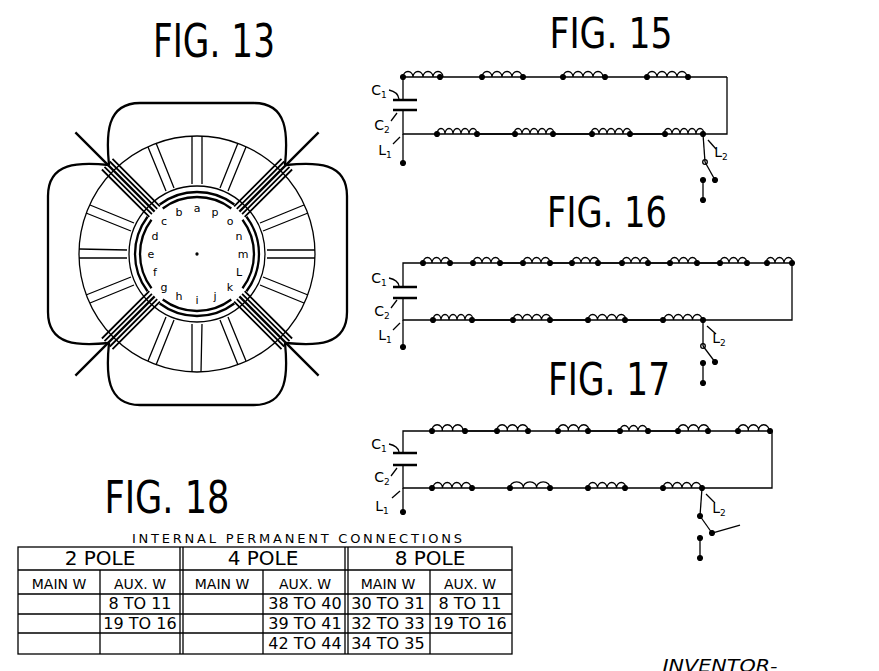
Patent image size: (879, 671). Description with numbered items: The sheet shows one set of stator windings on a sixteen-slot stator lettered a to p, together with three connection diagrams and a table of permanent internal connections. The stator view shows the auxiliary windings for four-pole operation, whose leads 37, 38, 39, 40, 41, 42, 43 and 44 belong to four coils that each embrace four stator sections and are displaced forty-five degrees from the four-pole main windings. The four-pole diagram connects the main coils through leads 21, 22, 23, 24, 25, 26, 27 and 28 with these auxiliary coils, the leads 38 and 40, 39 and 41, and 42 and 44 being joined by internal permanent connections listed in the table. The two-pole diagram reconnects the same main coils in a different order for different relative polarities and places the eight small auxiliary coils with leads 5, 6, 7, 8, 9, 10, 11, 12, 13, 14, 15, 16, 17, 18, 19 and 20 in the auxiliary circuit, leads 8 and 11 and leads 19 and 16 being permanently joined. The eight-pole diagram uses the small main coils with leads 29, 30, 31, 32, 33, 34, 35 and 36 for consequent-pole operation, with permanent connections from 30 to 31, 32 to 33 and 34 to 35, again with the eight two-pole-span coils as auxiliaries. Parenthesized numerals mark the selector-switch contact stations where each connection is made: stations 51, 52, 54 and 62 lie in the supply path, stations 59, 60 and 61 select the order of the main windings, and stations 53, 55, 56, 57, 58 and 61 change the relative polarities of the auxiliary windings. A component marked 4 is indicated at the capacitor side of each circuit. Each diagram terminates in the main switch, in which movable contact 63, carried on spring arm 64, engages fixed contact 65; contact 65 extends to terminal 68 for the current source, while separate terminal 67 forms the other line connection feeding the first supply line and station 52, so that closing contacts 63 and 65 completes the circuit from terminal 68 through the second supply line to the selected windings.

In FIG. 15, the capacitor unit 4 is at (380, 110).
In FIG. 16, the capacitor unit 4 is at (380, 296).
In FIG. 17, the capacitor unit 4 is at (378, 464).
In FIG. 16, the coil lead 5 is at (648, 261).
In FIG. 16, the coil lead 6 is at (622, 261).
In FIG. 16, the coil lead 7 is at (423, 261).
In FIG. 17, the coil lead 7 is at (770, 429).
In FIG. 16, the coil lead 8 is at (450, 261).
In FIG. 17, the coil lead 8 is at (738, 429).
In FIG. 16, the coil lead 9 is at (523, 261).
In FIG. 17, the coil lead 9 is at (620, 429).
In FIG. 16, the coil lead 10 is at (550, 261).
In FIG. 17, the coil lead 10 is at (648, 429).
In FIG. 16, the coil lead 11 is at (473, 261).
In FIG. 17, the coil lead 11 is at (708, 429).
In FIG. 16, the coil lead 12 is at (500, 261).
In FIG. 17, the coil lead 12 is at (678, 429).
In FIG. 16, the coil lead 13 is at (572, 261).
In FIG. 16, the coil lead 14 is at (598, 261).
In FIG. 16, the coil lead 15 is at (792, 261).
In FIG. 17, the coil lead 15 is at (588, 429).
In FIG. 16, the coil lead 16 is at (767, 261).
In FIG. 17, the coil lead 16 is at (558, 429).
In FIG. 16, the coil lead 17 is at (697, 261).
In FIG. 17, the coil lead 17 is at (432, 429).
In FIG. 16, the coil lead 18 is at (670, 261).
In FIG. 17, the coil lead 18 is at (465, 429).
In FIG. 16, the coil lead 19 is at (747, 261).
In FIG. 17, the coil lead 19 is at (528, 429).
In FIG. 16, the coil lead 20 is at (720, 261).
In FIG. 17, the coil lead 20 is at (497, 429).
In FIG. 15, the coil lead 21 is at (437, 132).
In FIG. 16, the coil lead 21 is at (433, 318).
In FIG. 15, the coil lead 22 is at (477, 132).
In FIG. 16, the coil lead 22 is at (472, 318).
In FIG. 15, the coil lead 23 is at (553, 132).
In FIG. 16, the coil lead 23 is at (513, 318).
In FIG. 15, the coil lead 24 is at (515, 132).
In FIG. 16, the coil lead 24 is at (550, 318).
In FIG. 15, the coil lead 25 is at (592, 132).
In FIG. 16, the coil lead 25 is at (703, 318).
In FIG. 15, the coil lead 26 is at (630, 132).
In FIG. 16, the coil lead 26 is at (663, 318).
In FIG. 15, the coil lead 27 is at (703, 132).
In FIG. 16, the coil lead 27 is at (625, 318).
In FIG. 15, the coil lead 28 is at (665, 132).
In FIG. 16, the coil lead 28 is at (588, 318).
In FIG. 17, the coil lead 29 is at (432, 486).
In FIG. 17, the coil lead 30 is at (472, 486).
In FIG. 17, the coil lead 31 is at (510, 486).
In FIG. 17, the coil lead 32 is at (550, 486).
In FIG. 17, the coil lead 33 is at (588, 486).
In FIG. 17, the coil lead 34 is at (625, 486).
In FIG. 17, the coil lead 35 is at (663, 486).
In FIG. 17, the coil lead 36 is at (702, 486).
In FIG. 13, the coil lead 37 is at (75, 132).
In FIG. 15, the coil lead 37 is at (403, 75).
In FIG. 13, the coil lead 38 is at (97, 335).
In FIG. 15, the coil lead 38 is at (440, 75).
In FIG. 13, the coil lead 39 is at (75, 376).
In FIG. 15, the coil lead 39 is at (523, 75).
In FIG. 13, the coil lead 40 is at (280, 357).
In FIG. 15, the coil lead 40 is at (482, 75).
In FIG. 13, the coil lead 41 is at (319, 376).
In FIG. 15, the coil lead 41 is at (563, 75).
In FIG. 13, the coil lead 42 is at (302, 172).
In FIG. 15, the coil lead 42 is at (605, 75).
In FIG. 13, the coil lead 43 is at (319, 132).
In FIG. 15, the coil lead 43 is at (688, 75).
In FIG. 13, the coil lead 44 is at (120, 147).
In FIG. 15, the coil lead 44 is at (647, 75).
In FIG. 15, the contact station 51 is at (728, 105).
In FIG. 16, the contact station 51 is at (747, 291).
In FIG. 17, the contact station 51 is at (721, 488).
In FIG. 15, the contact station 52 is at (420, 132).
In FIG. 16, the contact station 52 is at (419, 320).
In FIG. 17, the contact station 52 is at (422, 486).
In FIG. 16, the contact station 53 is at (660, 273).
In FIG. 15, the contact station 54 is at (421, 89).
In FIG. 16, the contact station 54 is at (405, 265).
In FIG. 17, the contact station 54 is at (411, 433).
In FIG. 16, the contact station 55 is at (708, 273).
In FIG. 17, the contact station 55 is at (481, 441).
In FIG. 16, the contact station 56 is at (610, 273).
In FIG. 16, the contact station 57 is at (560, 273).
In FIG. 16, the contact station 58 is at (513, 273).
In FIG. 17, the contact station 58 is at (663, 441).
In FIG. 15, the contact station 59 is at (496, 144).
In FIG. 16, the contact station 59 is at (492, 331).
In FIG. 15, the contact station 60 is at (647, 144).
In FIG. 16, the contact station 60 is at (569, 331).
In FIG. 15, the contact station 61 is at (572, 144).
In FIG. 16, the contact station 61 is at (644, 331).
In FIG. 17, the contact station 61 is at (603, 441).
In FIG. 15, the contact station 62 is at (689, 149).
In FIG. 16, the contact station 62 is at (689, 334).
In FIG. 17, the contact station 62 is at (686, 503).
In FIG. 15, the main switch contact 63 is at (717, 180).
In FIG. 16, the main switch contact 63 is at (718, 360).
In FIG. 17, the main switch contact 63 is at (714, 534).
In FIG. 17, the spring arm 64 is at (738, 521).
In FIG. 15, the main switch contact 65 is at (703, 180).
In FIG. 16, the main switch contact 65 is at (703, 363).
In FIG. 17, the main switch contact 65 is at (700, 538).
In FIG. 15, the terminal 67 is at (403, 165).
In FIG. 16, the terminal 67 is at (403, 349).
In FIG. 17, the terminal 67 is at (405, 513).
In FIG. 15, the terminal 68 is at (705, 200).
In FIG. 16, the terminal 68 is at (705, 383).
In FIG. 17, the terminal 68 is at (702, 559).